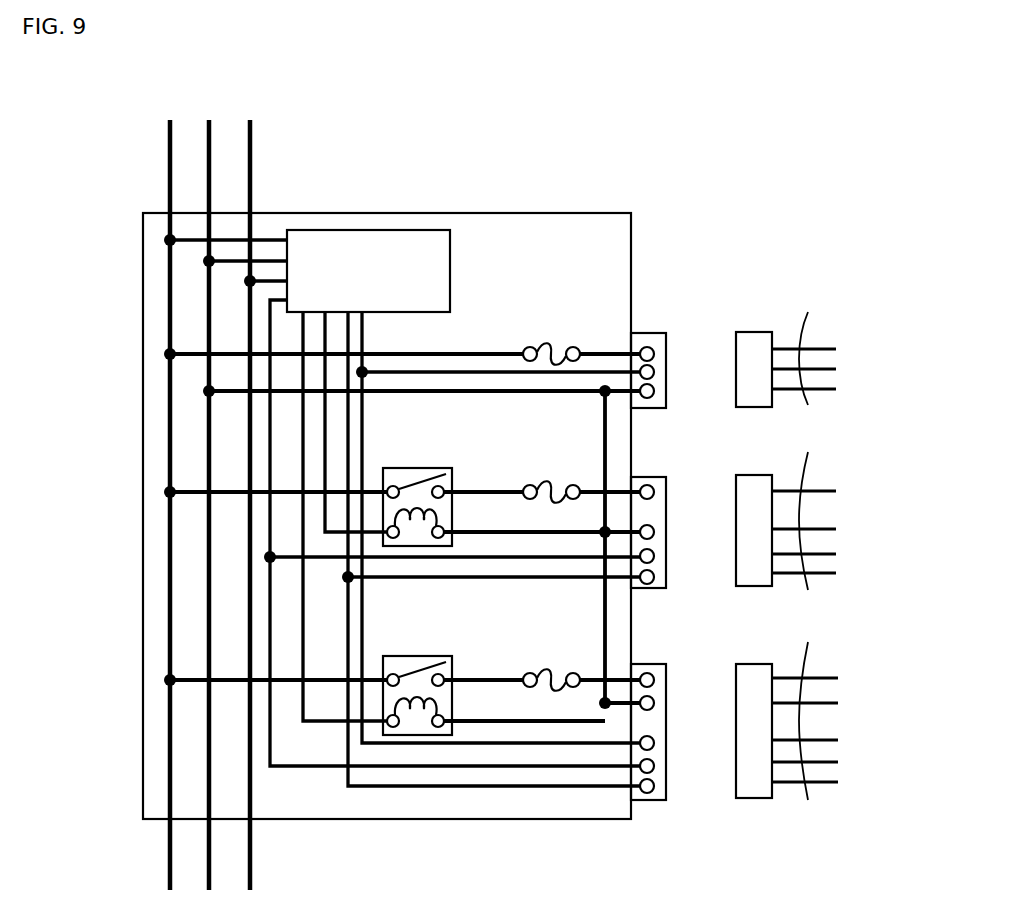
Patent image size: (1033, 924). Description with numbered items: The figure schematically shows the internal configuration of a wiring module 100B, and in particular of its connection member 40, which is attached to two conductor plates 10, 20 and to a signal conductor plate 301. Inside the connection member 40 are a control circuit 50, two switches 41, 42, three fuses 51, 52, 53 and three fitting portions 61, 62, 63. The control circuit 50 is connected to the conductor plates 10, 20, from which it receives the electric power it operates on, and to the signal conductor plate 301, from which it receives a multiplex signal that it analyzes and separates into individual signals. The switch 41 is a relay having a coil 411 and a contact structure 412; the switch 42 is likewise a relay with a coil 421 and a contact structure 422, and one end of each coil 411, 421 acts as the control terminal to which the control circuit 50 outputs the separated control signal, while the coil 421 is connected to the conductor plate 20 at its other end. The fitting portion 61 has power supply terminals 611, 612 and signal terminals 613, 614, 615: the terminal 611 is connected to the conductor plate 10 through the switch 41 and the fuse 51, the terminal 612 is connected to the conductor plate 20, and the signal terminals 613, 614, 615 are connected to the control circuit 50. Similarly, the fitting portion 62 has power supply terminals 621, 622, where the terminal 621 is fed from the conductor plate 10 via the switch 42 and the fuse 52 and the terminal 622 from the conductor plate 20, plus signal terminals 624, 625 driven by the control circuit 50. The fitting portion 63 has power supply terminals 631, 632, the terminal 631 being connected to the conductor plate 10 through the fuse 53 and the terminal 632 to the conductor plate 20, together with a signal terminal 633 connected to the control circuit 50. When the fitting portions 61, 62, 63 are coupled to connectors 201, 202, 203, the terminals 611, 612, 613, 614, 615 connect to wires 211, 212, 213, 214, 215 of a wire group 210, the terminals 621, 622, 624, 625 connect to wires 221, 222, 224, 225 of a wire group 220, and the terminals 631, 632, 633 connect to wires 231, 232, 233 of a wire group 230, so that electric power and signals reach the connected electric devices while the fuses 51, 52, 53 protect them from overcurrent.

The power supply control device 100B is at (603, 161).
The conductor plate 10 is at (166, 132).
The conductor plate 20 is at (206, 178).
The signal conductor plate 301 is at (254, 160).
The connection member 40 is at (484, 223).
The control circuit 50 is at (400, 234).
The switch 41 is at (451, 660).
The coil 411 is at (442, 709).
The contact structure 412 is at (410, 672).
The switch 42 is at (451, 471).
The coil 421 is at (442, 520).
The contact structure 422 is at (410, 484).
The fuse 51 is at (548, 673).
The fuse 52 is at (548, 485).
The fuse 53 is at (548, 347).
The fitting portion 61 is at (678, 710).
The power supply terminal 611 is at (656, 678).
The power supply terminal 612 is at (656, 703).
The signal terminal 613 is at (656, 741).
The signal terminal 614 is at (656, 766).
The signal terminal 615 is at (656, 786).
The fitting portion 62 is at (678, 513).
The power supply terminal 621 is at (656, 490).
The power supply terminal 622 is at (656, 530).
The signal terminal 624 is at (656, 556).
The signal terminal 625 is at (656, 577).
The fitting portion 63 is at (678, 349).
The power supply terminal 631 is at (656, 351).
The power supply terminal 632 is at (656, 393).
The signal terminal 633 is at (656, 372).
The connector 201 is at (751, 666).
The connector 202 is at (751, 488).
The connector 203 is at (751, 341).
The wire group 210 is at (835, 707).
The wire 211 is at (822, 664).
The wire 212 is at (822, 693).
The wire 213 is at (822, 724).
The wire 214 is at (822, 751).
The wire 215 is at (822, 776).
The wire group 220 is at (835, 508).
The wire 221 is at (822, 477).
The wire 222 is at (822, 519).
The wire 224 is at (822, 546).
The wire 225 is at (822, 568).
The wire group 230 is at (835, 344).
The wire 231 is at (822, 337).
The wire 232 is at (822, 381).
The wire 233 is at (822, 361).